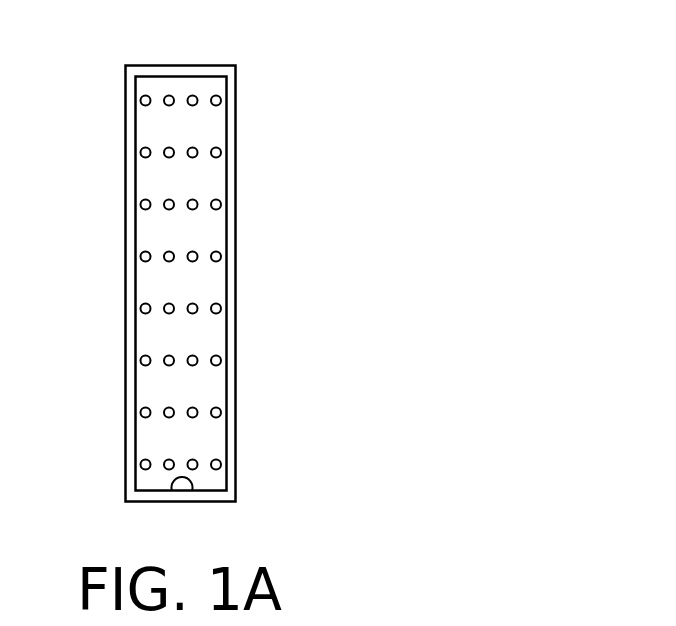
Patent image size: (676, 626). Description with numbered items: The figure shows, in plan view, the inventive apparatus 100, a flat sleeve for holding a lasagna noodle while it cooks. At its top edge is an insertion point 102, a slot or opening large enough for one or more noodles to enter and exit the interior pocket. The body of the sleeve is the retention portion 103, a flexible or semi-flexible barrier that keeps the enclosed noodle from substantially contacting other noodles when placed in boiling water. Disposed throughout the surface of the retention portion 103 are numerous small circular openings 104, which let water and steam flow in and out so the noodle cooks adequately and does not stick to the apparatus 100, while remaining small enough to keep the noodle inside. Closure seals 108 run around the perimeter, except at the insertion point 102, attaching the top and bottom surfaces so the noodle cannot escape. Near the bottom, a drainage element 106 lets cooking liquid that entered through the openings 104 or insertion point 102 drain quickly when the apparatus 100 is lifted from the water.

The inventive apparatus 100 is at (624, 69).
The insertion point 102 is at (178, 71).
The retention portion 103 is at (128, 269).
The opening 104 is at (138, 205).
The drainage element 106 is at (173, 486).
The closure seals 108 is at (230, 358).